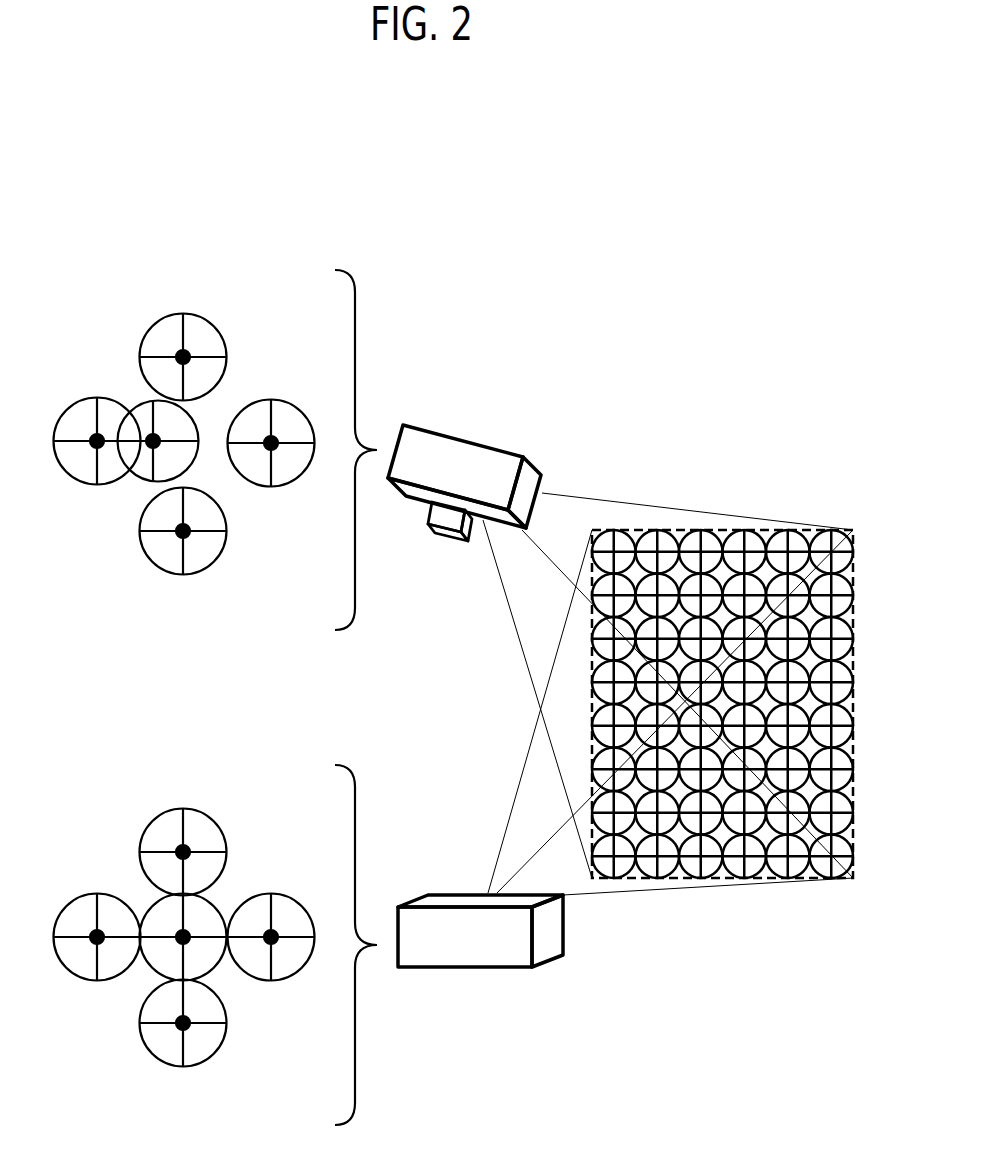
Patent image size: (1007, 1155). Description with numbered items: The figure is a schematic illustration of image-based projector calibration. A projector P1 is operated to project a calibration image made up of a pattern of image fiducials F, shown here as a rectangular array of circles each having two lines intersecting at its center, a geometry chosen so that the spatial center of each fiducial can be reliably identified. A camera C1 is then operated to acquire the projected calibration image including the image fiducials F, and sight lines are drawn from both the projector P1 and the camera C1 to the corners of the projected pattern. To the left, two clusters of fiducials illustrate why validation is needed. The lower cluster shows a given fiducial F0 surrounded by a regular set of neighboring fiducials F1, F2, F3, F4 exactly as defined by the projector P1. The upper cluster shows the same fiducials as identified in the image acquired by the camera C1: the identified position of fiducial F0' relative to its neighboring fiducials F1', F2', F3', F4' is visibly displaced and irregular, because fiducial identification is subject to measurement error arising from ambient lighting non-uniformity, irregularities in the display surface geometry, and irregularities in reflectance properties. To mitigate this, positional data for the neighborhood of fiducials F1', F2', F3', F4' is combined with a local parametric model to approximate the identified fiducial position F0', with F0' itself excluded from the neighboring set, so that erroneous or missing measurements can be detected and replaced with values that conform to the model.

The neighboring image fiducial in acquired calibration image F1' is at (177, 331).
The neighboring image fiducial in acquired calibration image F4' is at (91, 415).
The identified fiducial position in acquired image F0' is at (198, 420).
The neighboring image fiducial in acquired calibration image F2' is at (285, 478).
The neighboring image fiducial in acquired calibration image F3' is at (177, 567).
The neighboring fiducial defined by projector F1 is at (177, 828).
The neighboring fiducial defined by projector F4 is at (91, 911).
The fiducial defined by projector F0 is at (213, 916).
The neighboring fiducial defined by projector F2 is at (286, 976).
The neighboring fiducial defined by projector F3 is at (180, 1062).
The camera C1 is at (464, 483).
The projector P1 is at (480, 931).
The image fiducials F is at (855, 670).